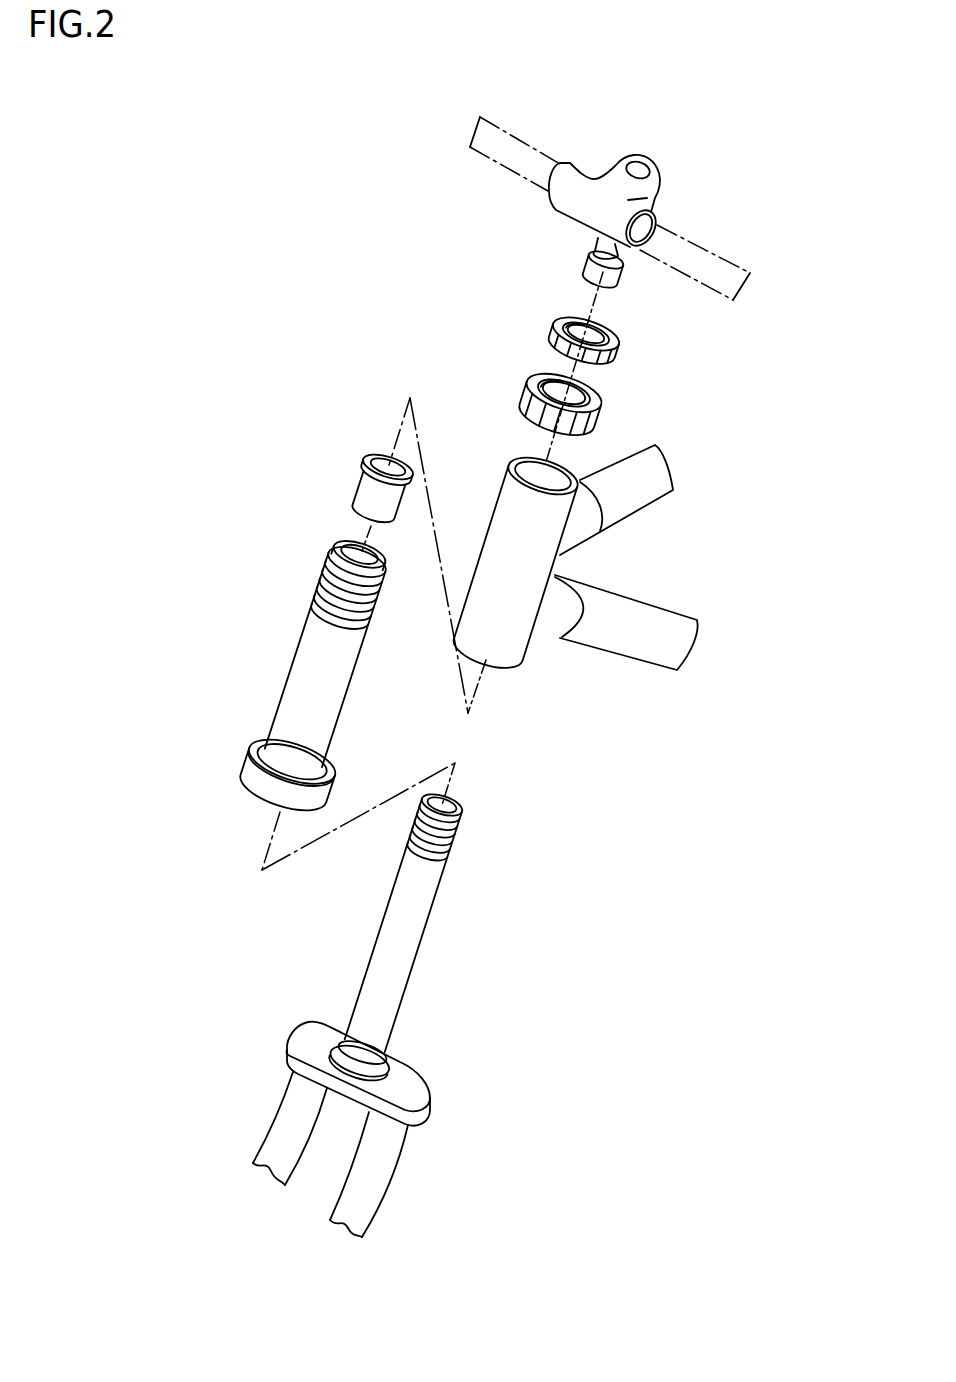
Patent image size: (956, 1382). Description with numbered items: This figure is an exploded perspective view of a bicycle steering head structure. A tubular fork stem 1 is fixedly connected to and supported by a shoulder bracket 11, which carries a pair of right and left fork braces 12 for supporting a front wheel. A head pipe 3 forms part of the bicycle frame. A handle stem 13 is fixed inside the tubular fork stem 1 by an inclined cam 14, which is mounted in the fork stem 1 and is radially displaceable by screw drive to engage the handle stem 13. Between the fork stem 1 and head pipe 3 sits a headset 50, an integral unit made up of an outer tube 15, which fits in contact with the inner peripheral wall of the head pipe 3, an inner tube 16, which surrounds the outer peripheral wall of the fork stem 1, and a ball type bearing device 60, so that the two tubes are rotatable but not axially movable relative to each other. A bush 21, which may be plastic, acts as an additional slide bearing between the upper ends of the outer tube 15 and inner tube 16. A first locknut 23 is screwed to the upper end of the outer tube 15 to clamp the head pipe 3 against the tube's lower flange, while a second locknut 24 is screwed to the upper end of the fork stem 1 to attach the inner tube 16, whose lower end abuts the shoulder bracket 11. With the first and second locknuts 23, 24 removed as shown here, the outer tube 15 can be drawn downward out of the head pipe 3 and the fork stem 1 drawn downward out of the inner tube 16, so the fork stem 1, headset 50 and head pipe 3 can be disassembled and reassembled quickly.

The fork stem 1 is at (420, 938).
The head pipe 3 is at (500, 508).
The shoulder bracket 11 is at (412, 1090).
The fork braces 12 is at (278, 1128).
The handle stem 13 is at (567, 208).
The inclined cam 14 is at (588, 279).
The outer tube 15 is at (300, 645).
The inner tube 16 is at (331, 558).
The bush 21 is at (357, 497).
The first locknut 23 is at (605, 403).
The second locknut 24 is at (622, 338).
The headset 50 is at (263, 477).
The ball type bearing device 60 is at (260, 743).